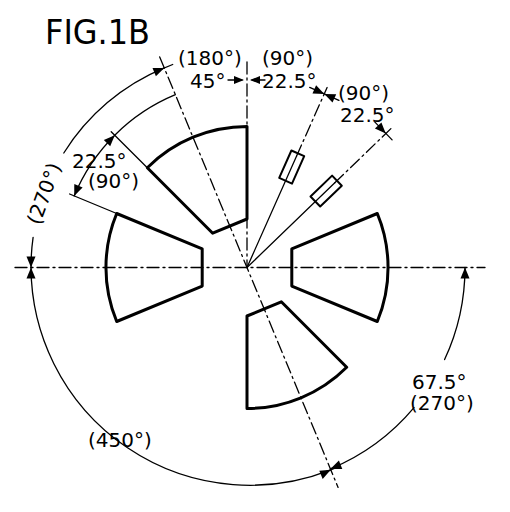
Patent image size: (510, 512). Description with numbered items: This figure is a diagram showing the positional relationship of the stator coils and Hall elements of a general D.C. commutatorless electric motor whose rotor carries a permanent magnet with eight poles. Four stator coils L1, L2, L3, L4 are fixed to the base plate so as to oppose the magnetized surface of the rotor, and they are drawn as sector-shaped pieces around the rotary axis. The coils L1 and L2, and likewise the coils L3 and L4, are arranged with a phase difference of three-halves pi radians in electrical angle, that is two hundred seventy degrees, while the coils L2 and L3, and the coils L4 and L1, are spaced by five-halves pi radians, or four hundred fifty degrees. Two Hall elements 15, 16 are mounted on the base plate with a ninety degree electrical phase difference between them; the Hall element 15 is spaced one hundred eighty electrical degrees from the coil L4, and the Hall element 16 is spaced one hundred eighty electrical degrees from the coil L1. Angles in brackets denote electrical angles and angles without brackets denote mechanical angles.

The stator coil L1 is at (175, 146).
The stator coil L2 is at (108, 291).
The stator coil L3 is at (318, 391).
The stator coil L4 is at (388, 285).
The Hall element 15 is at (338, 194).
The Hall element 16 is at (285, 162).